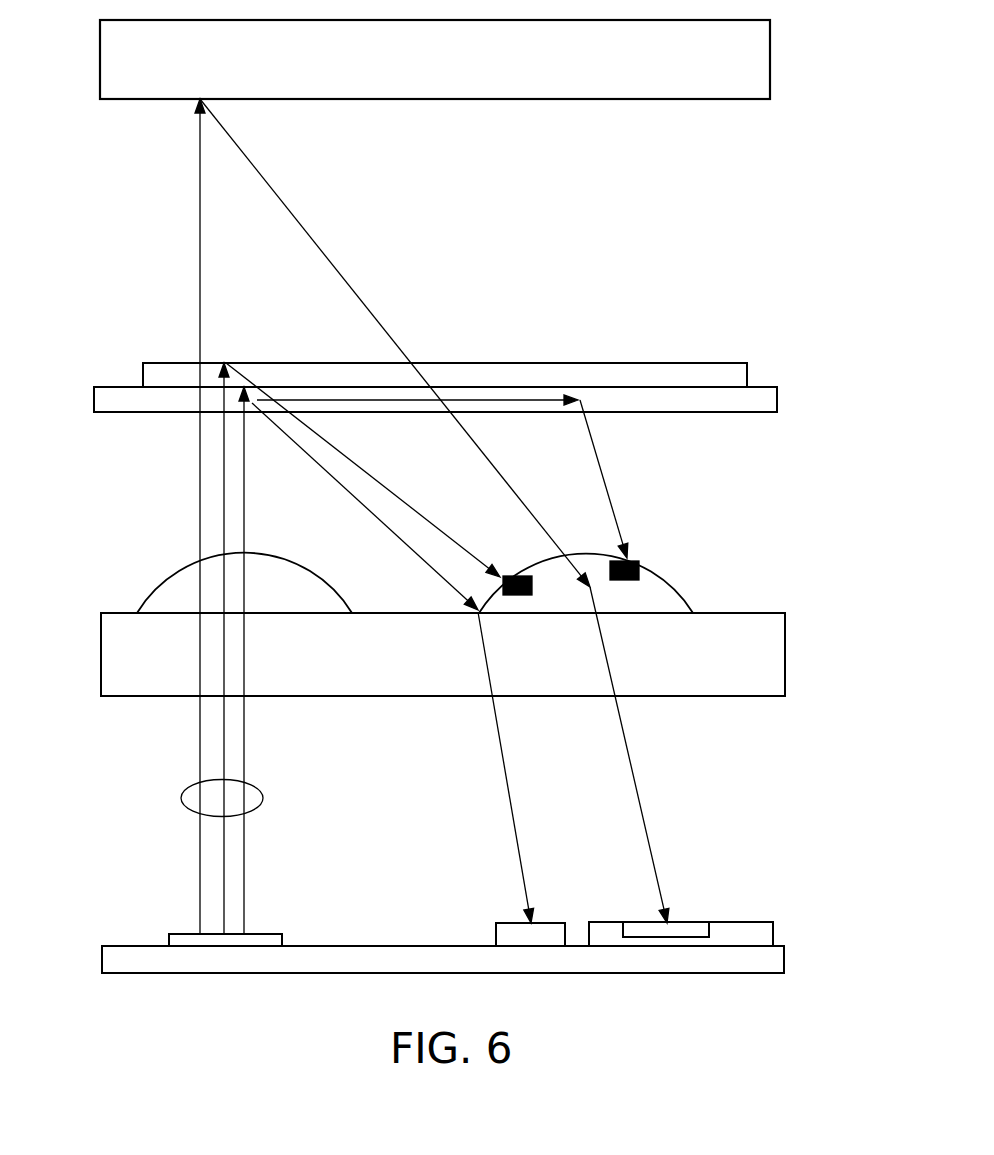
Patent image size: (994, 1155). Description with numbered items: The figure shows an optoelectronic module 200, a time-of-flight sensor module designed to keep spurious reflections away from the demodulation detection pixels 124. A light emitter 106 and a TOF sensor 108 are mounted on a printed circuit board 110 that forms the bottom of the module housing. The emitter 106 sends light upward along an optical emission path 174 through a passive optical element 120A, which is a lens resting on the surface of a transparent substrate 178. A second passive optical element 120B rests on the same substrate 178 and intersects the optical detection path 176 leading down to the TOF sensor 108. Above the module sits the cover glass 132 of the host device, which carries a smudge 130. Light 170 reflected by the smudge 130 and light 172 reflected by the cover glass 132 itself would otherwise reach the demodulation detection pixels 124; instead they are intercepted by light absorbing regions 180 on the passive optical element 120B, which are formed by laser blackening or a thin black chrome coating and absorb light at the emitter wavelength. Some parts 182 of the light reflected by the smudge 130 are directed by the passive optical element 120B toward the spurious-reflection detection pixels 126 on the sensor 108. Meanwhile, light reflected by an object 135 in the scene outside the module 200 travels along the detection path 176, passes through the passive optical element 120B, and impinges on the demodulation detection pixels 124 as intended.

The object 135 is at (100, 57).
The optoelectronic module 200 is at (684, 238).
The smudge 130 is at (143, 372).
The cover glass 132 is at (94, 401).
The transparent substrate 178 is at (98, 636).
The passive optical element 120A is at (155, 580).
The passive optical element 120B is at (657, 566).
The light absorbing regions 180 is at (517, 595).
The optical emission path 174 is at (262, 797).
The light reflected by the smudge 170 is at (397, 496).
The parts of the light reflected by the smudge 182 is at (347, 492).
The light reflected by the cover glass 172 is at (622, 470).
The optical detection path 176 is at (640, 793).
The light emitter 106 is at (167, 940).
The printed circuit board 110 is at (127, 965).
The spurious-reflection detection pixels 126 is at (512, 922).
The TOF sensor 108 is at (745, 928).
The demodulation detection pixels 124 is at (700, 920).